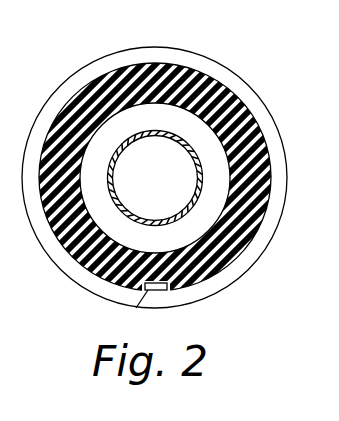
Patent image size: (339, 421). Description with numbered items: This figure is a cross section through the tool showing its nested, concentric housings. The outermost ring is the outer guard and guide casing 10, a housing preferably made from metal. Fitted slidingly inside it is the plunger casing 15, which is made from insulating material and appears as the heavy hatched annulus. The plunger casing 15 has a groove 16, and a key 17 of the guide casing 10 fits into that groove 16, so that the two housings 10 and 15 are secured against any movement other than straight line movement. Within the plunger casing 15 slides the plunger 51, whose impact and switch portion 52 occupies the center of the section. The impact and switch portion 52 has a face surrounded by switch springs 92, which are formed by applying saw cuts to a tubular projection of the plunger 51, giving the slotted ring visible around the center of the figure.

The outer guard and guide casing 10 is at (232, 281).
The plunger casing 15 is at (260, 147).
The groove 16 is at (163, 290).
The key 17 is at (136, 308).
The plunger 51 is at (152, 118).
The impact and switch portion 52 is at (142, 170).
The switch springs 92 is at (175, 135).